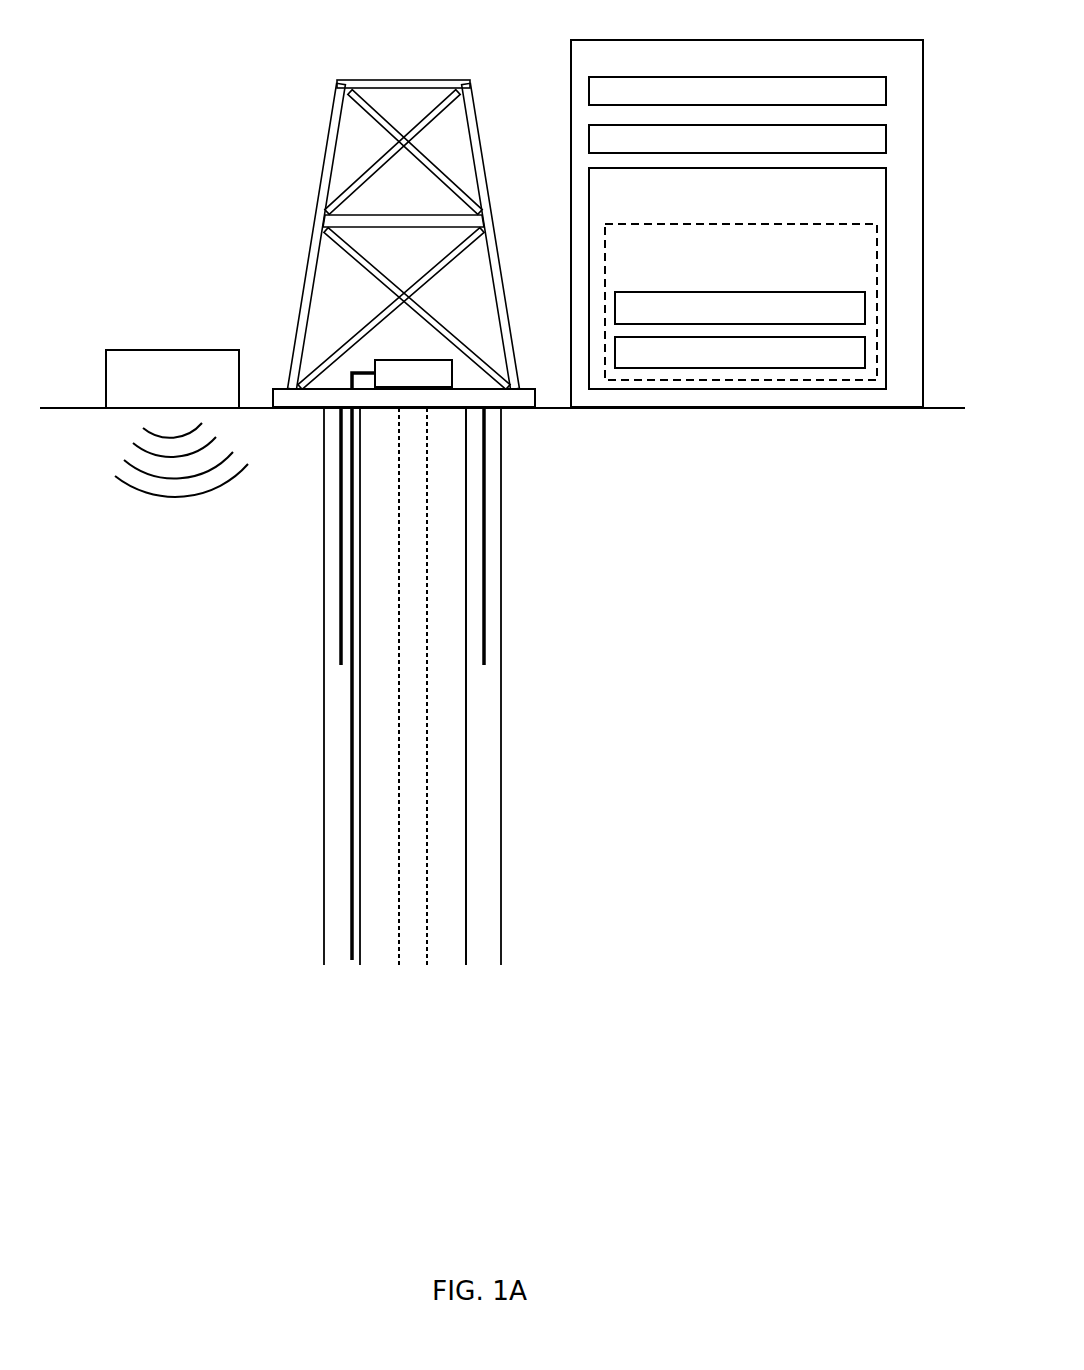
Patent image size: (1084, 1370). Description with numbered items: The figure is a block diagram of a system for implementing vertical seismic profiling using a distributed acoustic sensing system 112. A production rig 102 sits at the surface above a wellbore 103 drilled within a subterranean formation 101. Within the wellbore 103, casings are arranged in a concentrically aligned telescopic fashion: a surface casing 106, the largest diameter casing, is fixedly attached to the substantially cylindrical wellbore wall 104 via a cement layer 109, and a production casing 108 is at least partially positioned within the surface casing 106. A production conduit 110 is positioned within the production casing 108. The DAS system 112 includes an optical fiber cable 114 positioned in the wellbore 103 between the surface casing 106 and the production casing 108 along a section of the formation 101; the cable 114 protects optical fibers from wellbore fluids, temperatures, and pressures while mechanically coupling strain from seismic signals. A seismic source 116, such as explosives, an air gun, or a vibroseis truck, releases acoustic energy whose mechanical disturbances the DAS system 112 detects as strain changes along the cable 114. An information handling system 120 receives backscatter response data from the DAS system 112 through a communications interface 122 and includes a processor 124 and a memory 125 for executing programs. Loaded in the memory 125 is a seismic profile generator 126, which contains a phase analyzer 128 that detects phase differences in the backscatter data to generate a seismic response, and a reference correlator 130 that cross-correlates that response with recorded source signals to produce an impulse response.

The subterranean formation 101 is at (465, 669).
The production rig 102 is at (422, 80).
The wellbore 103 is at (338, 719).
The wellbore wall 104 is at (500, 465).
The surface casing 106 is at (338, 520).
The production casing 108 is at (467, 559).
The cement layer 109 is at (493, 530).
The production conduit 110 is at (426, 682).
The distributed acoustic sensing (DAS) system 112 is at (428, 360).
The optical fiber cable 114 is at (350, 582).
The seismic source 116 is at (152, 350).
The information handling system 120 is at (747, 203).
The communications interface 122 is at (737, 91).
The processor 124 is at (737, 139).
The memory 125 is at (737, 278).
The seismic profile generator 126 is at (741, 302).
The phase analyzer 128 is at (740, 308).
The reference correlator 130 is at (740, 352).